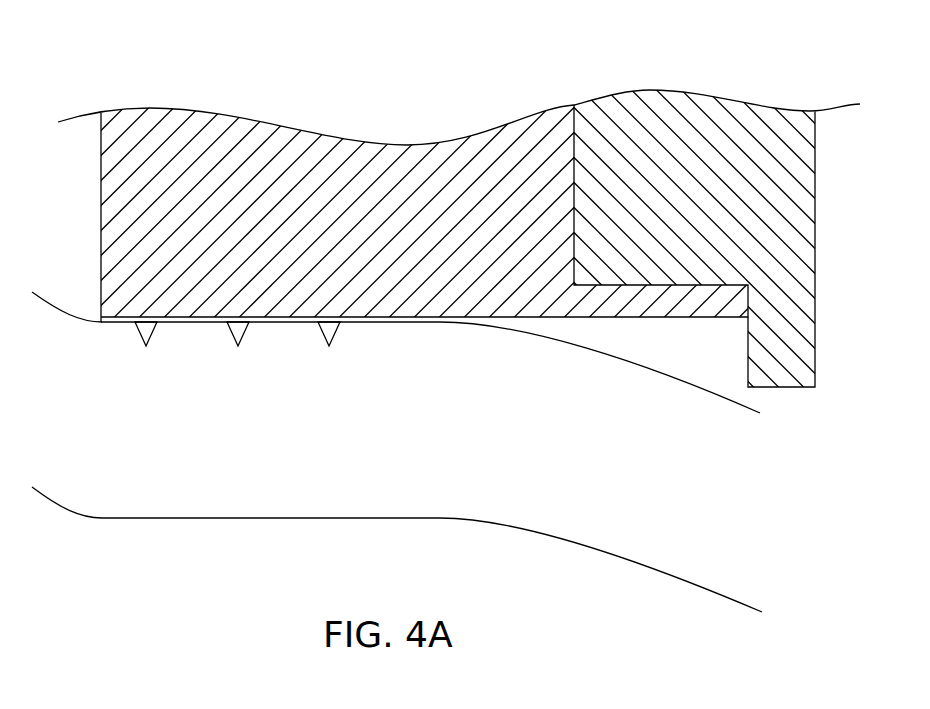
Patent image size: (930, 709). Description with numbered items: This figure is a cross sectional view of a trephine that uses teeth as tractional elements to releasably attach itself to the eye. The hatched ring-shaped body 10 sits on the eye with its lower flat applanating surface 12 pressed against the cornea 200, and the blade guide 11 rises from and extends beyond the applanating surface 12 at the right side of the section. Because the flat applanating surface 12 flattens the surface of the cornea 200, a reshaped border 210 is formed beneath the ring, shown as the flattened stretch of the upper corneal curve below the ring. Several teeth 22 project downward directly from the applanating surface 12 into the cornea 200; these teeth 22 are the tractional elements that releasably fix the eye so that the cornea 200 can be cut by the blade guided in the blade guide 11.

The ring-shaped body 10 is at (357, 157).
The blade guide 11 is at (660, 105).
The applanating surface 12 is at (119, 322).
The teeth 22 is at (241, 337).
The reshaped border 210 is at (278, 322).
The cornea 200 is at (592, 447).